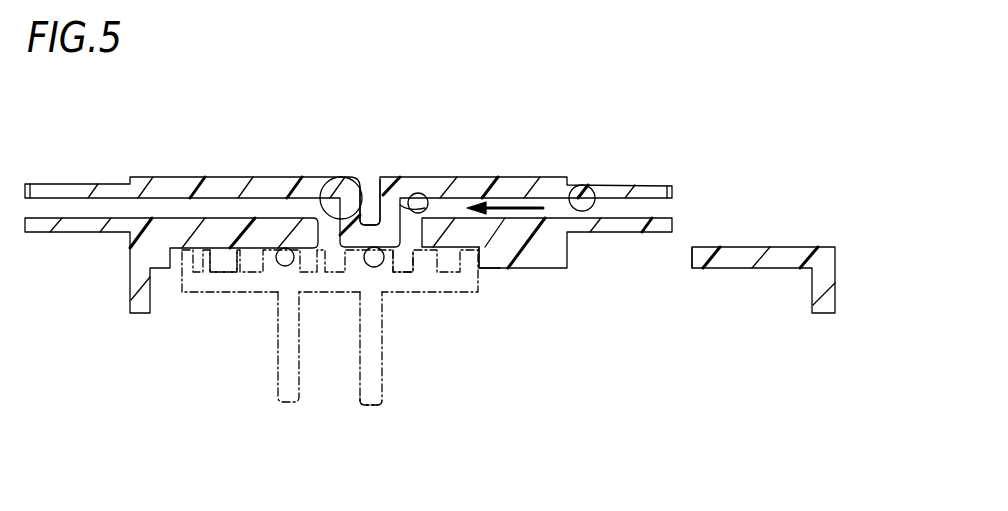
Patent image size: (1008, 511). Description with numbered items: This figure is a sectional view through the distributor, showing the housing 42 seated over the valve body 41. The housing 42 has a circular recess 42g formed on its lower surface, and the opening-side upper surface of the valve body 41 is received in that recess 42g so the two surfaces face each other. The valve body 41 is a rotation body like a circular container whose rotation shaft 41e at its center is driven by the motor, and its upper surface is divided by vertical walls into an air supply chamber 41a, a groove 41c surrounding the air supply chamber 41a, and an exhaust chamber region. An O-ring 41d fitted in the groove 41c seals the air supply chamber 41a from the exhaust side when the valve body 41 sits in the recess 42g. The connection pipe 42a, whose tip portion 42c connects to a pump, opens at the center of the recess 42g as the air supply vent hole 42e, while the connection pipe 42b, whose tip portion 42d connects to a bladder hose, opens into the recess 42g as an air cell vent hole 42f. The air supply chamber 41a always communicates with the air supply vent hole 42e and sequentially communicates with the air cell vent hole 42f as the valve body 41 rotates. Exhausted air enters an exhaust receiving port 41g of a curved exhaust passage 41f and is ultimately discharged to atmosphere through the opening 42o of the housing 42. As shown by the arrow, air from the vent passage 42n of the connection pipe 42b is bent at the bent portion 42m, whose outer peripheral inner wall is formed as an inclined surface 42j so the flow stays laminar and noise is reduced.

The valve body 41 is at (395, 293).
The air supply chamber 41a is at (345, 270).
The groove 41c is at (275, 270).
The O-ring 41d is at (400, 270).
The rotation shaft 41e is at (367, 407).
The exhaust passage 41f is at (212, 268).
The exhaust receiving port 41g is at (440, 272).
The housing 42 is at (757, 246).
The connection pipe 42a is at (222, 176).
The connection pipe 42b is at (522, 176).
The tip portion 42c is at (52, 183).
The tip portion 42d is at (652, 185).
The air supply vent hole 42e is at (320, 188).
The air cell vent hole 42f is at (425, 208).
The recess 42g is at (484, 268).
The inclined surface 42j is at (423, 193).
The bent portion 42m is at (384, 176).
The vent passage 42n is at (597, 198).
The opening 42o is at (692, 258).